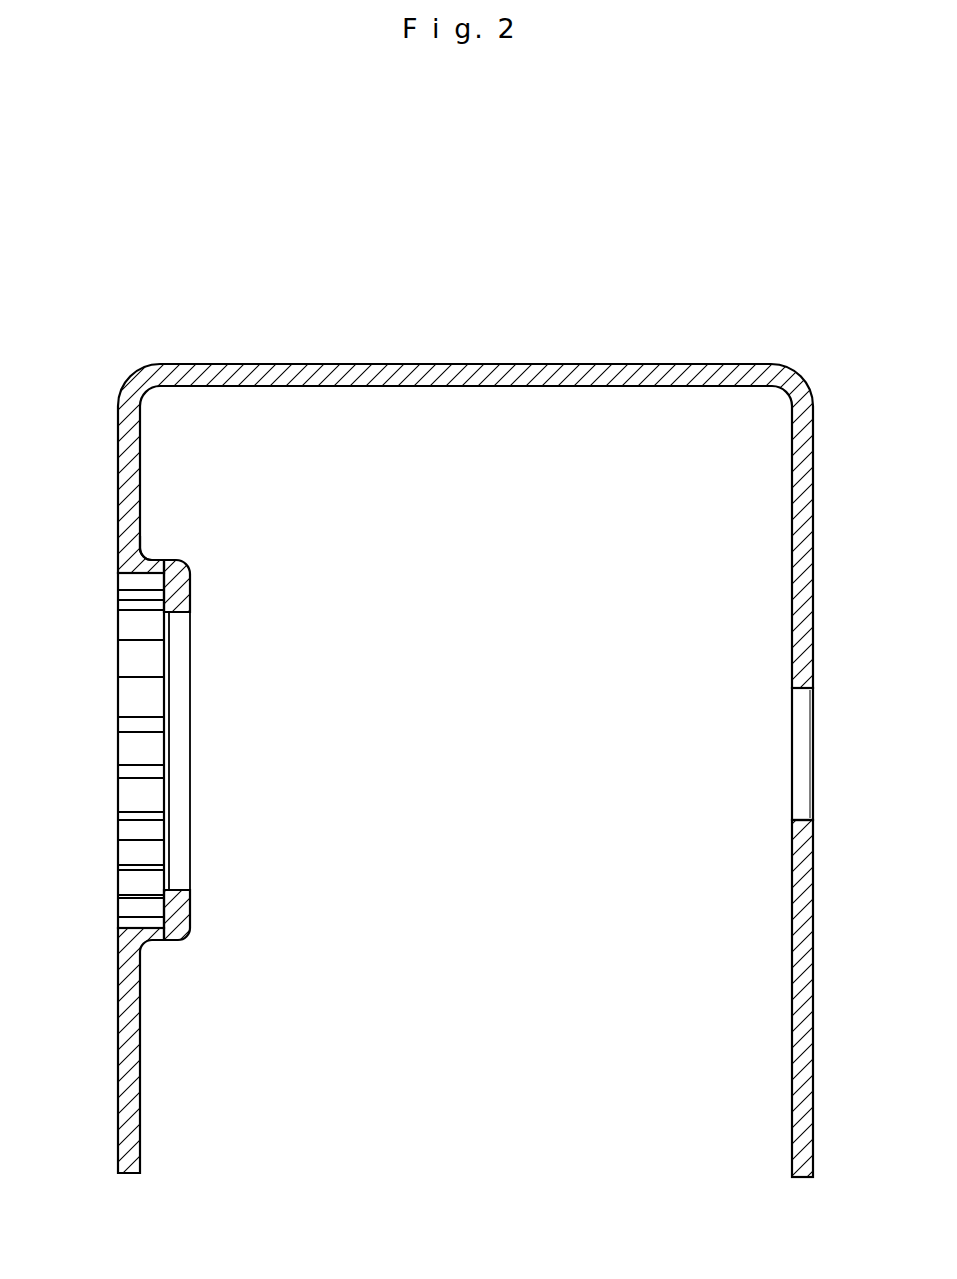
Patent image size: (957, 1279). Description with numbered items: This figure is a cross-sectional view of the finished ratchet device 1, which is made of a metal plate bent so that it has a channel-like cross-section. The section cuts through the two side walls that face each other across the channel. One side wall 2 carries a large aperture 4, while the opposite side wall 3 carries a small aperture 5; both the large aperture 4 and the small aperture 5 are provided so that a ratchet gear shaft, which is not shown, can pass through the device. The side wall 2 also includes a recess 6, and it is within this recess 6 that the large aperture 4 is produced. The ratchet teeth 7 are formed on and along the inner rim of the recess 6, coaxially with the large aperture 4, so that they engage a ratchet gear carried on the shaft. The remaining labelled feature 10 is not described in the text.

The ratchet device 1 is at (355, 313).
The side wall 2 is at (118, 1120).
The opposite side wall 3 is at (805, 1090).
The large aperture 4 is at (191, 798).
The small aperture 5 is at (800, 748).
The recess 6 is at (176, 598).
The ratchet teeth 7 is at (133, 913).
The stepped portion 10 is at (150, 556).